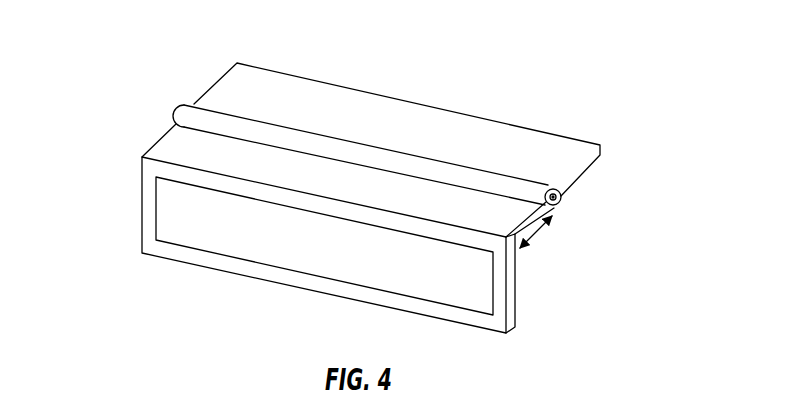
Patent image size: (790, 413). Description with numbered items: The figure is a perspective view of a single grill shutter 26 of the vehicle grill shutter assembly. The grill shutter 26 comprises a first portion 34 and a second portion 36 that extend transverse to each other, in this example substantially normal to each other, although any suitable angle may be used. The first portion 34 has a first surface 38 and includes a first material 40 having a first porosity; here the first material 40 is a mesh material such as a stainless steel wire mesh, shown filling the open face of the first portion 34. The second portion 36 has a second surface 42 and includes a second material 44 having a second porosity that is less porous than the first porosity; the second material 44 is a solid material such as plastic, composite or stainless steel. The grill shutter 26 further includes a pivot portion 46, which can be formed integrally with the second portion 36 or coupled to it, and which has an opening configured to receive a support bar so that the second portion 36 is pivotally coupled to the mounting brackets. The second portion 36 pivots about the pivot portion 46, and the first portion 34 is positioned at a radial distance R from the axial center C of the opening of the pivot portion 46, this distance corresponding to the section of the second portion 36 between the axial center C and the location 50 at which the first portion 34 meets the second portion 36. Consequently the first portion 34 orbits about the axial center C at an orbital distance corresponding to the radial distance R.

The grill shutter 26 is at (598, 268).
The first portion 34 is at (139, 194).
The second portion 36 is at (155, 136).
The first surface 38 is at (147, 243).
The first material 40 is at (197, 243).
The second surface 42 is at (262, 165).
The second material 44 is at (438, 203).
The pivot portion 46 is at (525, 193).
The location at which the first portion meets the second portion 50 is at (514, 272).
The axial center C is at (557, 202).
The radial distance R is at (538, 239).